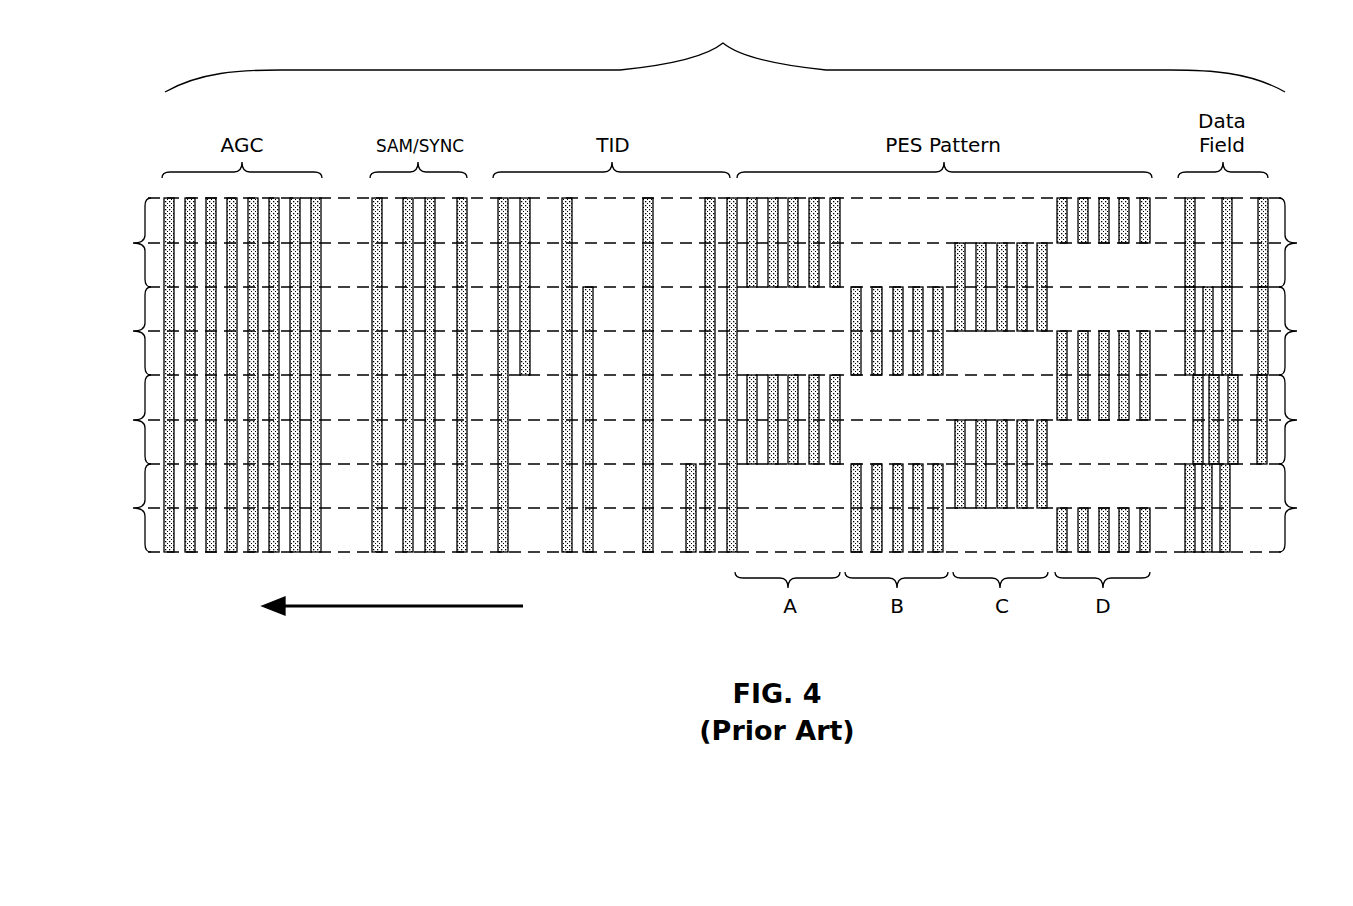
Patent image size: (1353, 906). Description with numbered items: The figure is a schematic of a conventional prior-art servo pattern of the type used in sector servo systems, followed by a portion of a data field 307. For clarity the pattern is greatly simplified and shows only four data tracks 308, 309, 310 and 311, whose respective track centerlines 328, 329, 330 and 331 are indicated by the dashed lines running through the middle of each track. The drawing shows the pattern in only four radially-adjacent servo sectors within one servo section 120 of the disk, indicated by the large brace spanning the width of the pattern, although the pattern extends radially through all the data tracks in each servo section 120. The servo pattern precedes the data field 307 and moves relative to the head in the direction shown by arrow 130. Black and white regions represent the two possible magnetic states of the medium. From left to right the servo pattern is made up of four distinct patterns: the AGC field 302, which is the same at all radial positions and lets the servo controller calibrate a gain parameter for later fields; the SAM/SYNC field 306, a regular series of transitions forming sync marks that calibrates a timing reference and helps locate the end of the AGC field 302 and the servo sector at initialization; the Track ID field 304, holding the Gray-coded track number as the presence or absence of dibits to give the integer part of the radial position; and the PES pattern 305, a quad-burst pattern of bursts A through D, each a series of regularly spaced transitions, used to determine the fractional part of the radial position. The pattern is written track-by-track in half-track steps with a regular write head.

The servo section 120 is at (725, 55).
The AGC field 302 is at (190, 171).
The SAM/SYNC field 306 is at (383, 171).
The Track ID field 304 is at (536, 171).
The PES pattern 305 is at (784, 171).
The data field 307 is at (1190, 171).
The track 308 is at (714, 242).
The track 309 is at (714, 331).
The track 310 is at (714, 419).
The track 311 is at (714, 508).
The track centerline 328 is at (860, 245).
The track centerline 329 is at (774, 334).
The track centerline 330 is at (861, 421).
The track centerline 331 is at (774, 508).
The arrow 130 is at (352, 608).